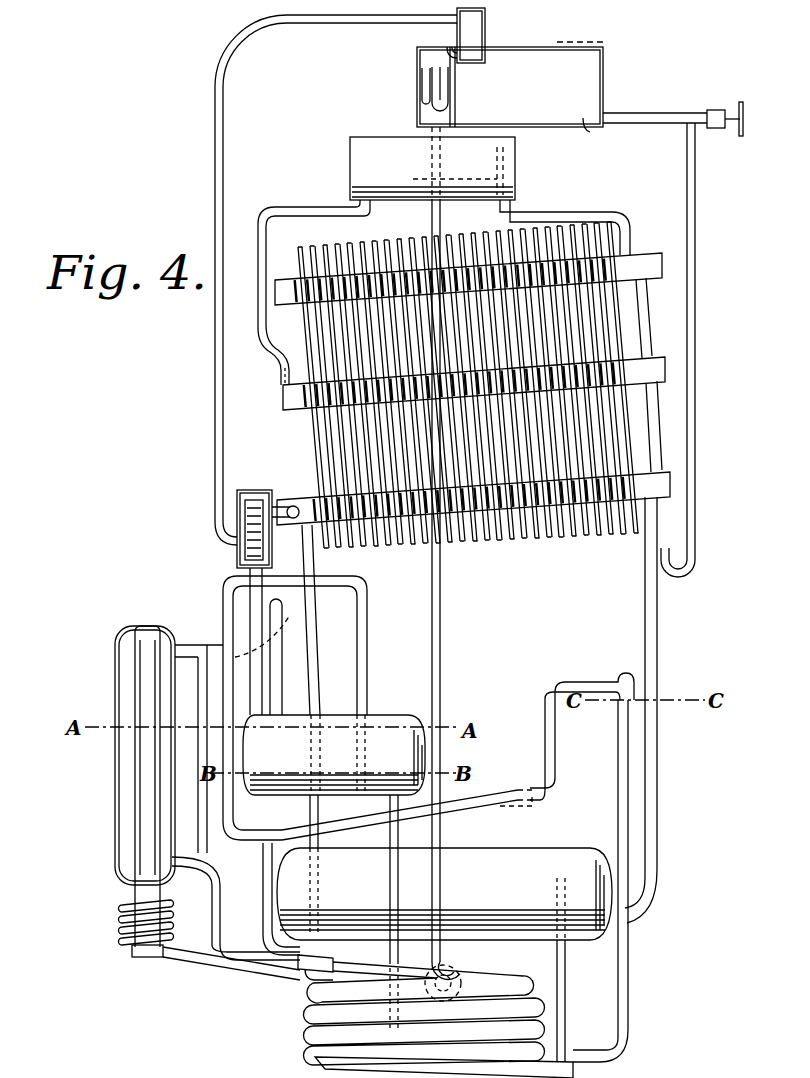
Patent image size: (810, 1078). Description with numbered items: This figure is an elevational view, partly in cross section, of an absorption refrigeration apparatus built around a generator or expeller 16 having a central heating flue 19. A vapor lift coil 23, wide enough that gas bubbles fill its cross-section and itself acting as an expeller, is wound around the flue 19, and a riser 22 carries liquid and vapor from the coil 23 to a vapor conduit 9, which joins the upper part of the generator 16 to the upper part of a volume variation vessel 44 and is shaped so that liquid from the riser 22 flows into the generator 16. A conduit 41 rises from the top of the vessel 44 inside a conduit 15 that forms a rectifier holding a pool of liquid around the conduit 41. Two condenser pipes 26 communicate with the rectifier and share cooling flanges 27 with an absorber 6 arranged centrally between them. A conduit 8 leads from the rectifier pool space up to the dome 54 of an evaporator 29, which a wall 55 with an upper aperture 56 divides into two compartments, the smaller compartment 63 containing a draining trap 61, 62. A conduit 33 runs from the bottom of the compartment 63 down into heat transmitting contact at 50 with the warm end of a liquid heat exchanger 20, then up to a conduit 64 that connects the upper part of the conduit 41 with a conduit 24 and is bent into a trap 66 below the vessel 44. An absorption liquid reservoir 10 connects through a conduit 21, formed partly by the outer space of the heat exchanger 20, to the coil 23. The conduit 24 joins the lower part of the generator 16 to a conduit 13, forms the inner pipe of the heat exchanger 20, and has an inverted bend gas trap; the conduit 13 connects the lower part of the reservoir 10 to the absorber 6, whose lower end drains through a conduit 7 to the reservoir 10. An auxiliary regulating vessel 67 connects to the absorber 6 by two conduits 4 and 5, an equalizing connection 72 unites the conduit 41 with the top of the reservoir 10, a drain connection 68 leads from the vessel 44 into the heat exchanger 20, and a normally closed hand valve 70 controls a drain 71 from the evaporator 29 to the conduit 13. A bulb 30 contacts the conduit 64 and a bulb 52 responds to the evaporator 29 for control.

The conduit 4 is at (604, 216).
The conduit 5 is at (305, 212).
The absorber 6 is at (652, 366).
The conduit 7 is at (320, 652).
The conduit 8 is at (215, 155).
The vapor conduit 9 is at (199, 645).
The absorption liquid reservoir 10 is at (548, 860).
The conduit 13 is at (658, 607).
The conduit forming a rectifier 15 is at (240, 500).
The generator 16 is at (116, 660).
The central heating flue 19 is at (148, 632).
The liquid heat exchanger 20 is at (312, 1056).
The conduit 21 is at (222, 968).
The riser 22 is at (207, 836).
The vapor lift coil 23 is at (122, 918).
The conduit 24 is at (220, 910).
The condenser pipes 26 is at (647, 262).
The cooling flanges 27 is at (398, 244).
The evaporator 29 is at (590, 132).
The bulb 30 is at (508, 806).
The conduit 33 is at (438, 651).
The conduit 41 is at (250, 577).
The volume variation vessel 44 is at (368, 718).
The heat transmitting contact 50 is at (306, 980).
The bulb 52 is at (607, 42).
The dome 54 is at (486, 28).
The wall 55 is at (452, 101).
The aperture 56 is at (448, 48).
The draining trap 61 is at (448, 85).
The draining trap 62 is at (422, 104).
The smaller compartment 63 is at (432, 58).
The conduit 64 is at (516, 790).
The trap 66 is at (256, 843).
The auxiliary vessel 67 is at (350, 145).
The drain connection 68 is at (390, 872).
The hand valve 70 is at (715, 110).
The drain 71 is at (687, 150).
The equalizing connection 72 is at (366, 590).